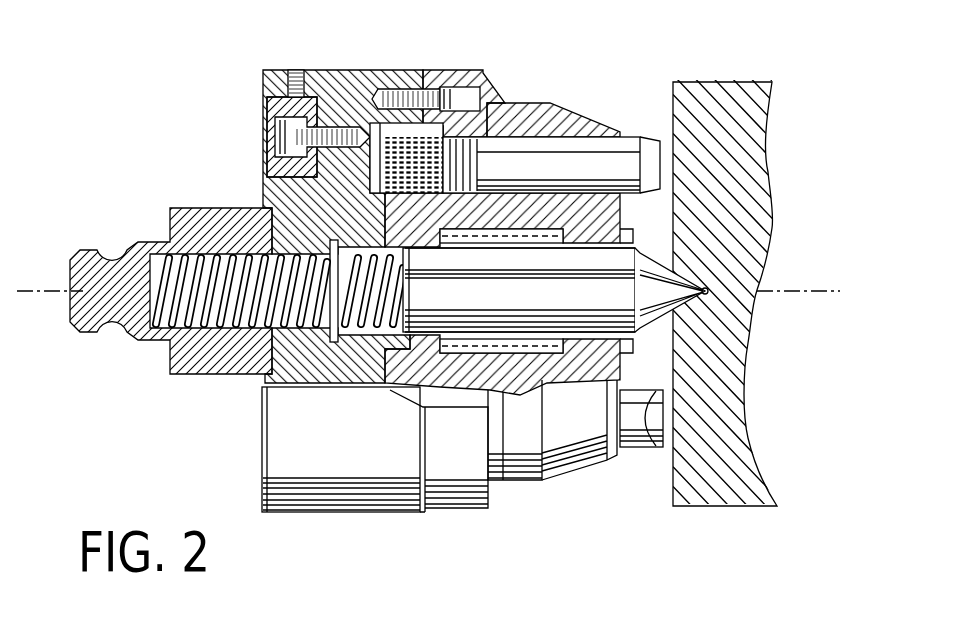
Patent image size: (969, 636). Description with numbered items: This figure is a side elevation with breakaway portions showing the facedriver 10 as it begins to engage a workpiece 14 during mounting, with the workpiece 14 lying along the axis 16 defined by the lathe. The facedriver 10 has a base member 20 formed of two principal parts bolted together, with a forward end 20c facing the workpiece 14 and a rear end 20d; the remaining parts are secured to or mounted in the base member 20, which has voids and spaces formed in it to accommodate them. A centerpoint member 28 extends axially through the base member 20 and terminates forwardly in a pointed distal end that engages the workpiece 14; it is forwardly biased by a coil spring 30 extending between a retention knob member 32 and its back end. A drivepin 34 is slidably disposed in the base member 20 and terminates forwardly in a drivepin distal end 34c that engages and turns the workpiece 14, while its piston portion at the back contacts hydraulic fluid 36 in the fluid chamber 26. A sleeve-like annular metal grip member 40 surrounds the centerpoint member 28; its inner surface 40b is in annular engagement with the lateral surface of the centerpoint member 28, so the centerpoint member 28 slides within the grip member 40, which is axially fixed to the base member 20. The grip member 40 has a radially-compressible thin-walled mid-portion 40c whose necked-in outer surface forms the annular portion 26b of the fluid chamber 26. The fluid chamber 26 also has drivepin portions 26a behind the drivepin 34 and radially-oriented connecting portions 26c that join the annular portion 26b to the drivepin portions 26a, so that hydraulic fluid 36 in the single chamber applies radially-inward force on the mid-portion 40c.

The facedriver 10 is at (362, 262).
The workpiece 14 is at (745, 143).
The axis 16 is at (826, 292).
The base member 20 is at (360, 148).
The forward end 20c is at (620, 125).
The rear end 20d is at (261, 433).
The fluid chamber 26 is at (397, 160).
The drivepin portions 26a is at (427, 165).
The annular portion 26b is at (531, 352).
The connecting portions 26c is at (310, 198).
The centerpoint member 28 is at (660, 277).
The coil spring 30 is at (247, 272).
The retention knob member 32 is at (84, 333).
The drivepin 34 is at (520, 152).
The drivepin distal end 34c is at (665, 425).
The hydraulic fluid 36 is at (533, 230).
The grip member 40 is at (616, 307).
The inner surface 40b is at (573, 287).
The mid-portion 40c is at (467, 250).